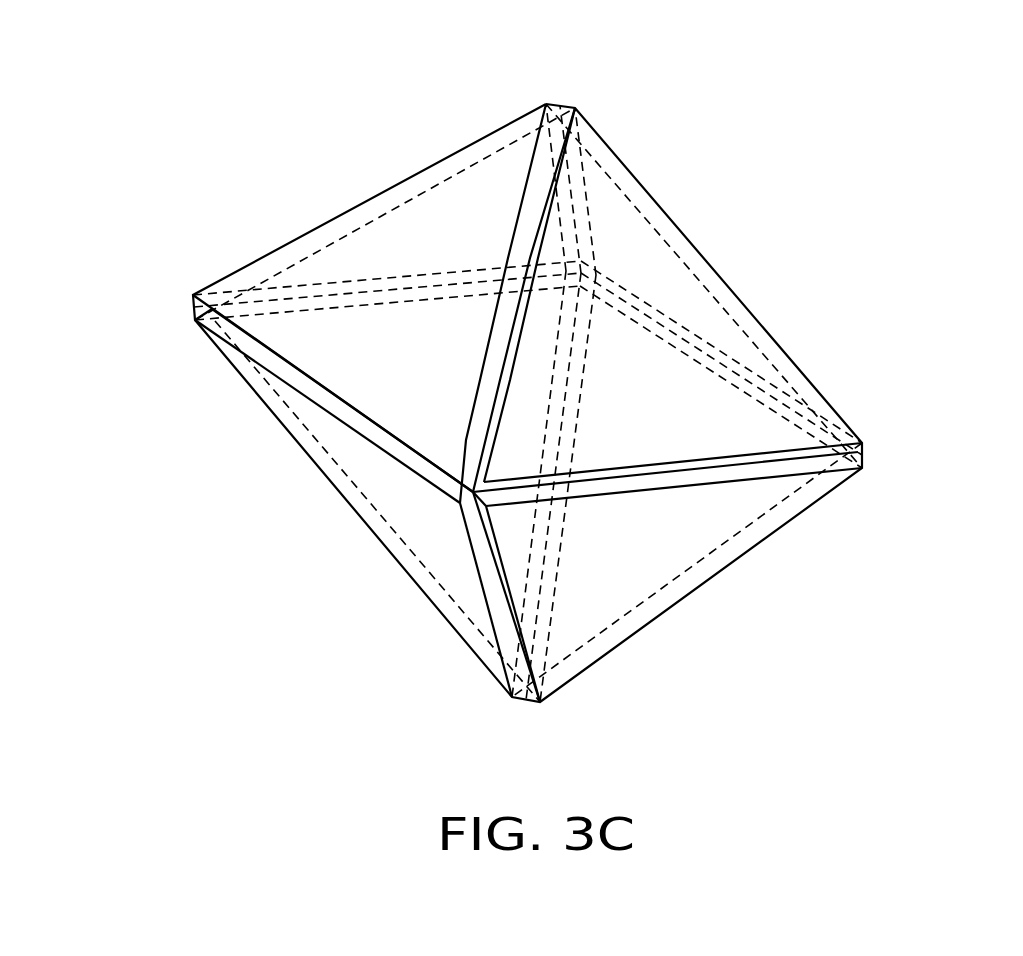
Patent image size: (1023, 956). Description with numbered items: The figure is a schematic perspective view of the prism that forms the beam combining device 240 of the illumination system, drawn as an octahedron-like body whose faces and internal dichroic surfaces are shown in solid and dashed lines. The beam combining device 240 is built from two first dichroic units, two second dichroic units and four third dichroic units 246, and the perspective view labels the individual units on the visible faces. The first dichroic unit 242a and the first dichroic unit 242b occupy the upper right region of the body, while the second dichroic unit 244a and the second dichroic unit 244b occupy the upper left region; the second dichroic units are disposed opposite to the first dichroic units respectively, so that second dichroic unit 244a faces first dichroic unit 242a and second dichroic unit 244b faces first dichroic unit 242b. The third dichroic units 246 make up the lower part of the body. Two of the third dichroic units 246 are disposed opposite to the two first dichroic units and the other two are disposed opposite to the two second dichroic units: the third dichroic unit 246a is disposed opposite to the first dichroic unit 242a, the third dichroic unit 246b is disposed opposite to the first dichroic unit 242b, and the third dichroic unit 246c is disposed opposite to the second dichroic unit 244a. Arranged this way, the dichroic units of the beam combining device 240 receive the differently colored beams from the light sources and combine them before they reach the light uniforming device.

The beam combining device 240 is at (860, 712).
The first dichroic unit 242a is at (677, 303).
The first dichroic unit 242b is at (640, 219).
The second dichroic unit 244a is at (472, 197).
The second dichroic unit 244b is at (380, 237).
The third dichroic units 246 is at (690, 405).
The third dichroic unit 246a is at (352, 436).
The third dichroic unit 246b is at (440, 510).
The third dichroic unit 246c is at (632, 567).